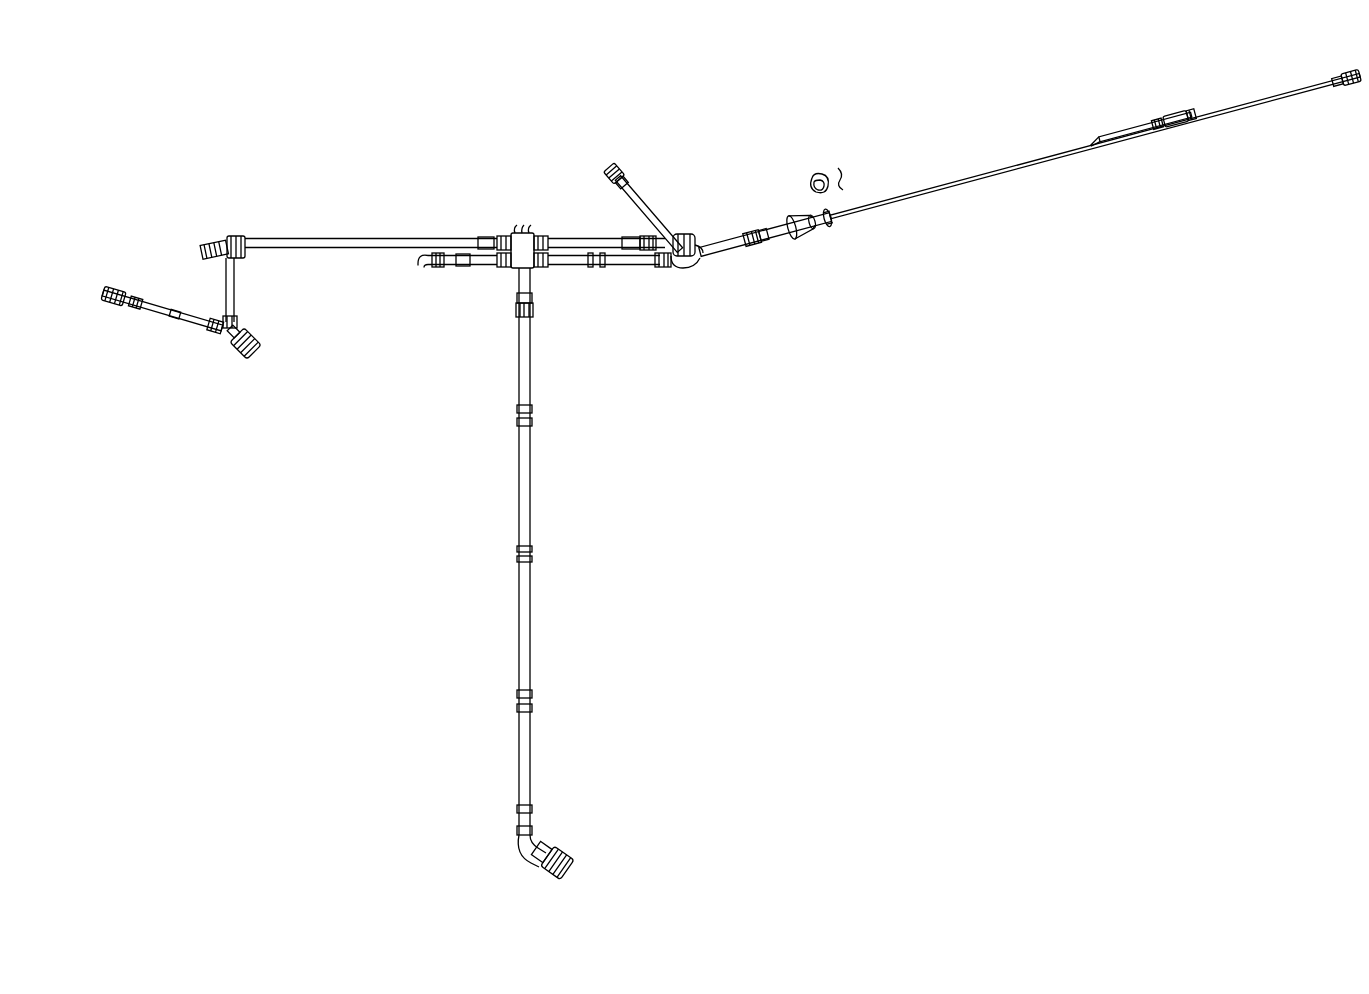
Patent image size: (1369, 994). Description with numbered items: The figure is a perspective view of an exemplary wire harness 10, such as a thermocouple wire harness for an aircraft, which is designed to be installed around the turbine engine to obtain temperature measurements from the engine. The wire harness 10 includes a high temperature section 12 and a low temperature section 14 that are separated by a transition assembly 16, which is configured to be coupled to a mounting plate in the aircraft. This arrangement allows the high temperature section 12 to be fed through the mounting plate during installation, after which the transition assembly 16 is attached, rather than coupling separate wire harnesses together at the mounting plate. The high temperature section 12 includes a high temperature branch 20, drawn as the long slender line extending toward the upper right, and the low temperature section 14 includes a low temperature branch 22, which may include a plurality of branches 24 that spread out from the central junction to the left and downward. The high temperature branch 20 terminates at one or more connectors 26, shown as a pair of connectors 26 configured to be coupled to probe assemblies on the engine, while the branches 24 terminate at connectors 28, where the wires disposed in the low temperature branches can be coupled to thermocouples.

The wire harness 10 is at (1150, 66).
The high temperature section 12 is at (1018, 142).
The low temperature section 14 is at (455, 210).
The transition assembly 16 is at (810, 262).
The high temperature branch 20 is at (1058, 160).
The low temperature branch 22 is at (629, 270).
The branches 24 is at (259, 291).
The connectors 26 is at (1356, 88).
The connectors 28 is at (557, 850).